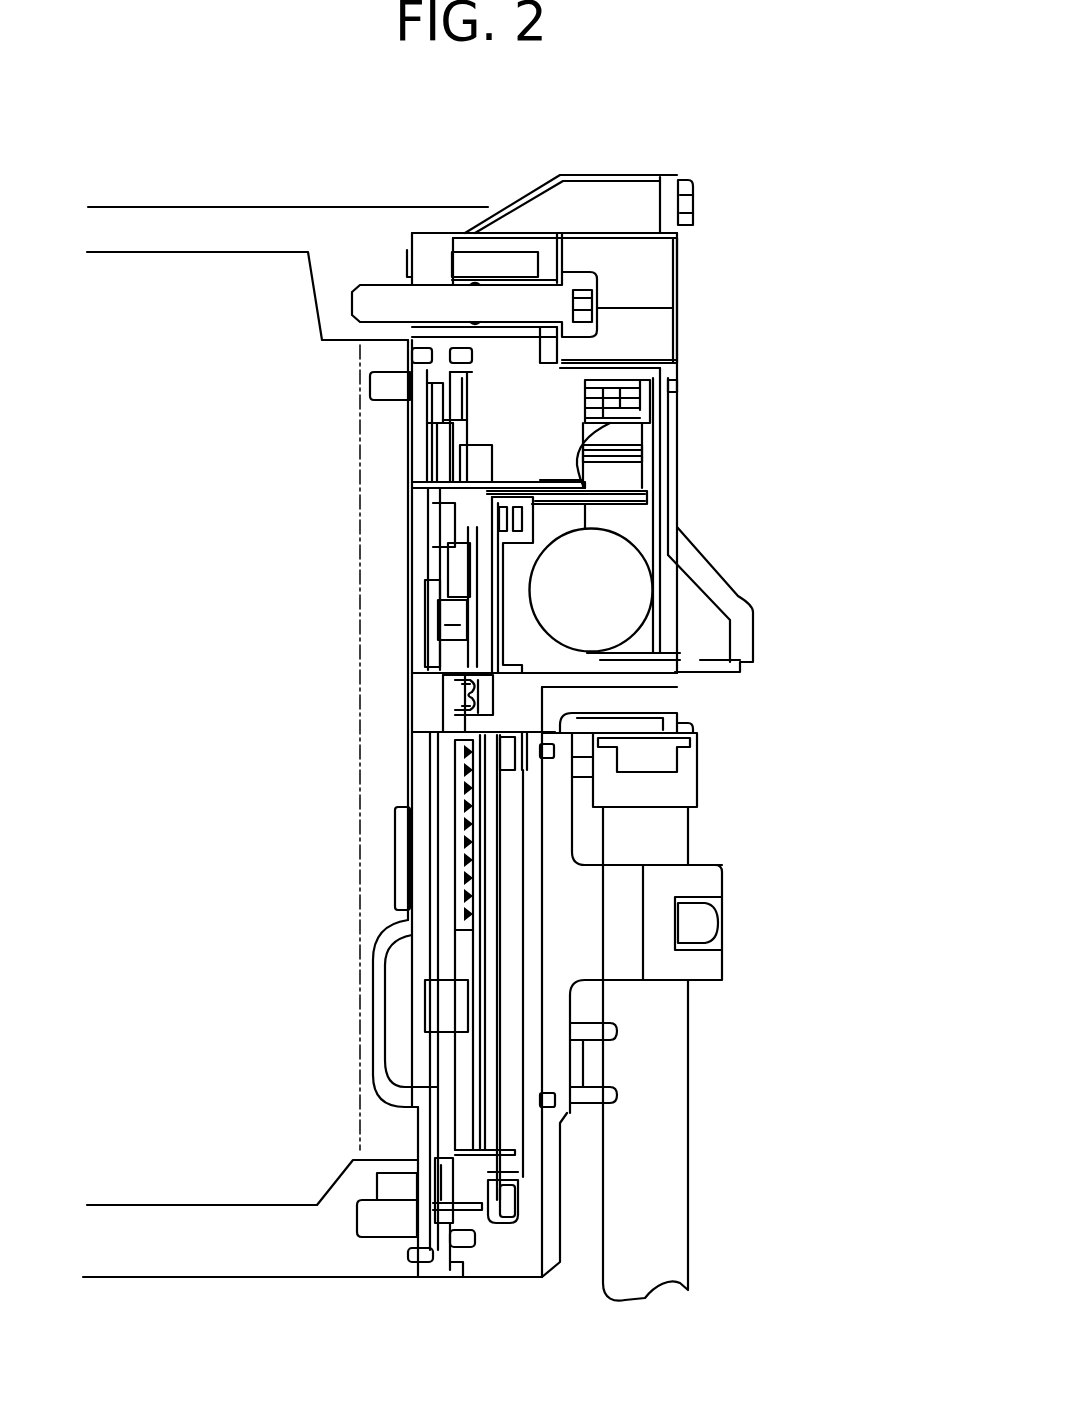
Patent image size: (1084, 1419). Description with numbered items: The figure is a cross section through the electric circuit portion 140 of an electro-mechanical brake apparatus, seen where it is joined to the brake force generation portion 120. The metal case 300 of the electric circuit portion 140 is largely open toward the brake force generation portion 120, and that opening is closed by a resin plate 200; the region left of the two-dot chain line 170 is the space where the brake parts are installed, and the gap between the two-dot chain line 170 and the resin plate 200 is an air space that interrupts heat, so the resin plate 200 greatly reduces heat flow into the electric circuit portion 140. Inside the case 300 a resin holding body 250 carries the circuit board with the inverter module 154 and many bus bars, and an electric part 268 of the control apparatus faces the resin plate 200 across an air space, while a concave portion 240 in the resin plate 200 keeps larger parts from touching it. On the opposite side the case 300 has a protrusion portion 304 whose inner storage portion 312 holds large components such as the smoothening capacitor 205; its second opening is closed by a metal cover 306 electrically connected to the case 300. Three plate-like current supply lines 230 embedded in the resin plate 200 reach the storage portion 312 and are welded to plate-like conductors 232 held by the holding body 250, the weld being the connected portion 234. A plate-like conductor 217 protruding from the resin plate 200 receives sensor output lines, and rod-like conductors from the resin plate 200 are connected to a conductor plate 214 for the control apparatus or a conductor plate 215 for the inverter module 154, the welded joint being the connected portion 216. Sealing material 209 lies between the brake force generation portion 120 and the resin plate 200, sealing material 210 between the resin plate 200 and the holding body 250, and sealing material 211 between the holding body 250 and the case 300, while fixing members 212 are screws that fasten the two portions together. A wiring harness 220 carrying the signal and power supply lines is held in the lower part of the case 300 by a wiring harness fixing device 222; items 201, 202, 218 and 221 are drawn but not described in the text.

The brake force generation portion 120 is at (186, 232).
The electric circuit portion 140 is at (918, 406).
The inverter module 154 is at (540, 1017).
The two-dot chain line 170 is at (358, 651).
The resin plate 200 is at (412, 852).
The shaft 201 is at (435, 1050).
The rod 202 is at (485, 795).
The smoothening capacitor 205 is at (635, 580).
The sealing material 209 is at (408, 355).
The sealing material 210 is at (417, 370).
The sealing material 211 is at (554, 752).
The fixing member 212 is at (355, 302).
The conductor plate 214 is at (522, 1222).
The conductor plate 215 is at (600, 1093).
The connected portion 216 is at (548, 1190).
The plate-like conductor 217 is at (455, 720).
The spring 218 is at (455, 683).
The wiring harness 220 is at (665, 1063).
The bracket 221 is at (622, 957).
The wiring harness fixing device 222 is at (712, 905).
The current supply line 230 is at (507, 487).
The plate-like conductor 232 is at (640, 530).
The connected portion 234 is at (645, 497).
The concave portion 240 is at (393, 1018).
The holding body 250 is at (668, 384).
The electric part 268 is at (440, 997).
The metal case 300 is at (557, 830).
The protrusion portion 304 is at (627, 357).
The cover 306 is at (745, 620).
The storage portion 312 is at (625, 477).